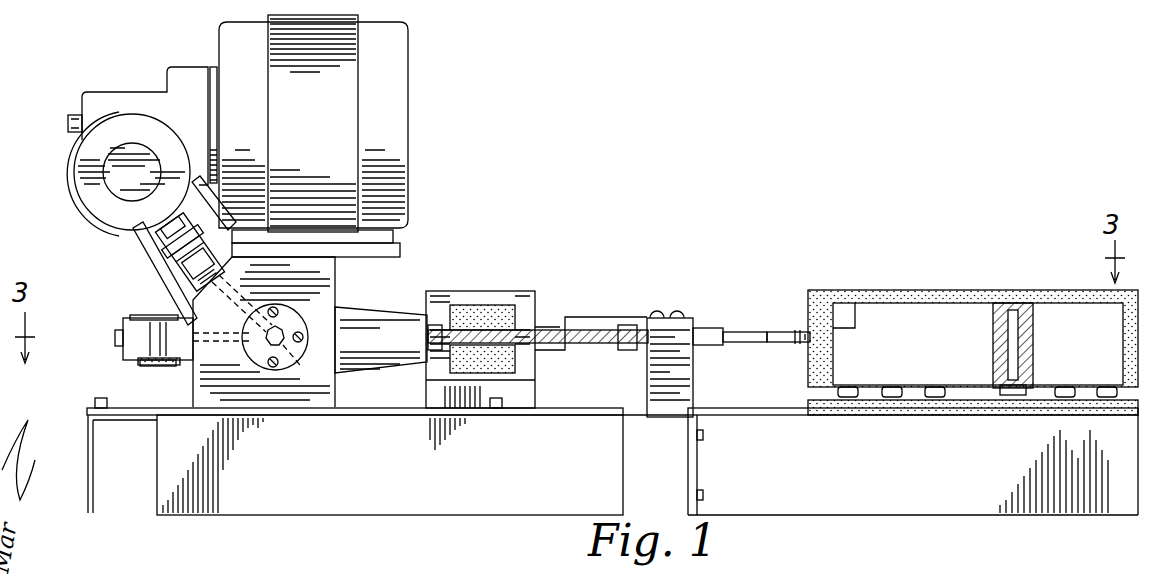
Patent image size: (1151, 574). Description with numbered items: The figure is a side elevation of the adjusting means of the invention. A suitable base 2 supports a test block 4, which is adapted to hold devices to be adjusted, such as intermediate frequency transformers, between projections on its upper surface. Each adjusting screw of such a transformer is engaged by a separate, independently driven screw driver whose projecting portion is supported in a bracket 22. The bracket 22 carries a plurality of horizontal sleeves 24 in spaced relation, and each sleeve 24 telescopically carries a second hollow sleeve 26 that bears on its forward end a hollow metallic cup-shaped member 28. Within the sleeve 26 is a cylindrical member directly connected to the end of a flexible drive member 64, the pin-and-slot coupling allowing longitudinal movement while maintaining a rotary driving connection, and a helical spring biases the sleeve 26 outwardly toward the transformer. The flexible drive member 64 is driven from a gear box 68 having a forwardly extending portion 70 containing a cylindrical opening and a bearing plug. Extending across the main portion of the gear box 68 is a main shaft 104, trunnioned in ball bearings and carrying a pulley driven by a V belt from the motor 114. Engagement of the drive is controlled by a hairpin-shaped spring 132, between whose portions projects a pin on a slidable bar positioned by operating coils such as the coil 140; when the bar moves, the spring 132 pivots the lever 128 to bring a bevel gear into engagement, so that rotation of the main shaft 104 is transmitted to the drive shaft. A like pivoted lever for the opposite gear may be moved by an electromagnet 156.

The base 2 is at (712, 478).
The test block 4 is at (998, 302).
The bracket 22 is at (693, 382).
The horizontal sleeve 24 is at (708, 328).
The second hollow sleeve 26 is at (744, 332).
The cup-shaped member 28 is at (790, 332).
The flexible drive member 64 is at (551, 332).
The gear box 68 is at (332, 270).
The forwardly extending portion 70 is at (382, 365).
The main shaft 104 is at (292, 356).
The motor 114 is at (397, 92).
The lever 128 is at (232, 296).
The spring 132 is at (138, 233).
The operating coil 140 is at (152, 364).
The electromagnet 156 is at (182, 275).